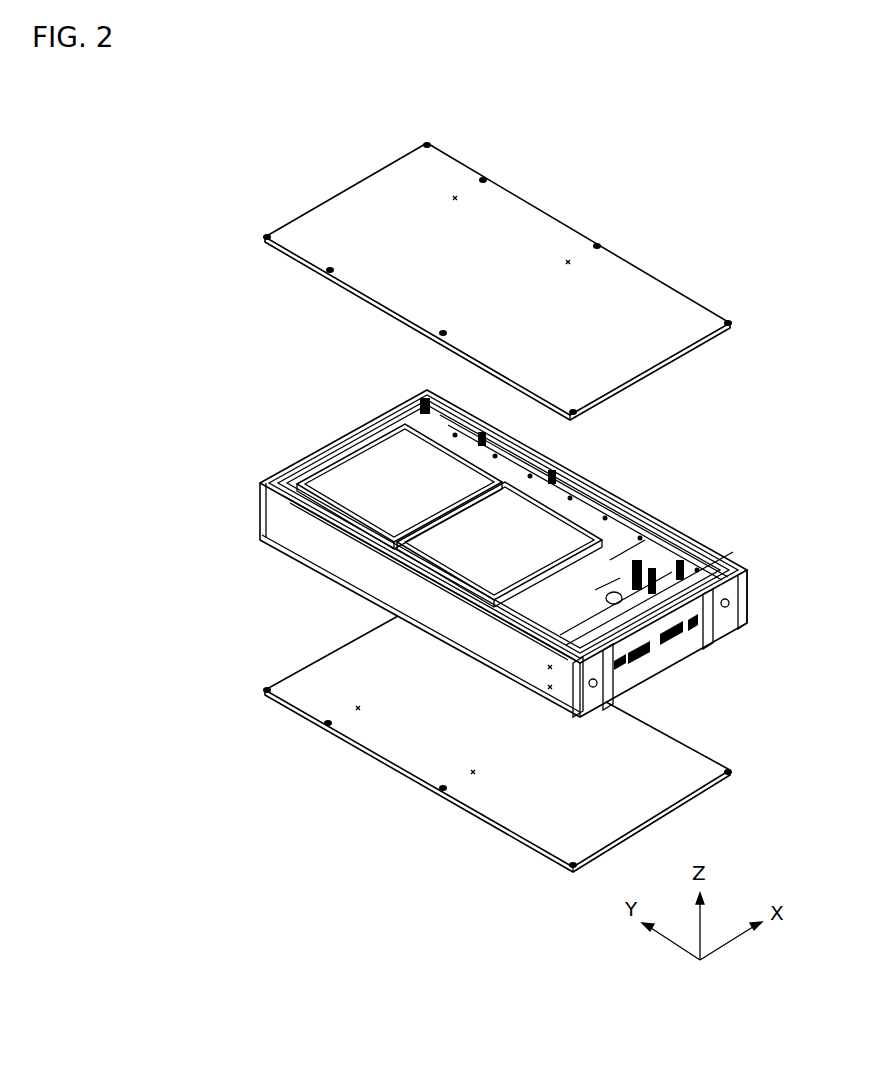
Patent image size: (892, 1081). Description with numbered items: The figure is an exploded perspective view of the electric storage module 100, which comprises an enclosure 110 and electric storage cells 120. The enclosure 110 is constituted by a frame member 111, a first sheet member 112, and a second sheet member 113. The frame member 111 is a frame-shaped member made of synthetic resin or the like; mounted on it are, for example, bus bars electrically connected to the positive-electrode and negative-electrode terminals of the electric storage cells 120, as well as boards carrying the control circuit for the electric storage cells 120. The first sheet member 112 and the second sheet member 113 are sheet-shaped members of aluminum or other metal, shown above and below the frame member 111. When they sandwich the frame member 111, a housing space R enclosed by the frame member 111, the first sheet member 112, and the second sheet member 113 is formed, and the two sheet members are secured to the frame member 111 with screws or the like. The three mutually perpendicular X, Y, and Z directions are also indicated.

The electric storage module 100 is at (747, 172).
The enclosure 110 is at (143, 383).
The frame member 111 is at (278, 515).
The first sheet member 112 is at (315, 249).
The second sheet member 113 is at (348, 672).
The electric storage cells 120 is at (442, 487).
The housing space R is at (622, 543).